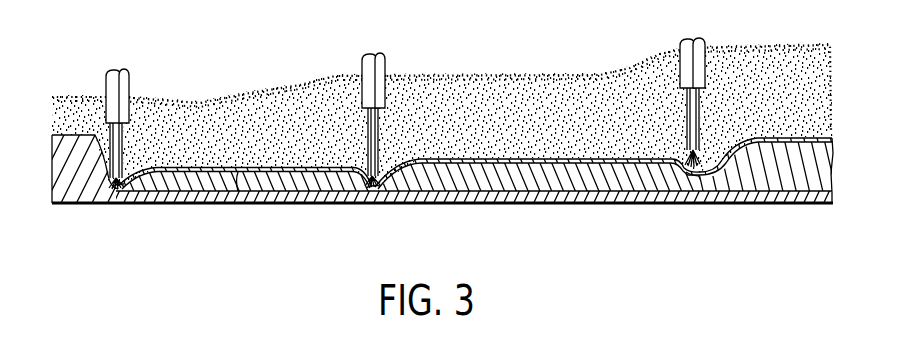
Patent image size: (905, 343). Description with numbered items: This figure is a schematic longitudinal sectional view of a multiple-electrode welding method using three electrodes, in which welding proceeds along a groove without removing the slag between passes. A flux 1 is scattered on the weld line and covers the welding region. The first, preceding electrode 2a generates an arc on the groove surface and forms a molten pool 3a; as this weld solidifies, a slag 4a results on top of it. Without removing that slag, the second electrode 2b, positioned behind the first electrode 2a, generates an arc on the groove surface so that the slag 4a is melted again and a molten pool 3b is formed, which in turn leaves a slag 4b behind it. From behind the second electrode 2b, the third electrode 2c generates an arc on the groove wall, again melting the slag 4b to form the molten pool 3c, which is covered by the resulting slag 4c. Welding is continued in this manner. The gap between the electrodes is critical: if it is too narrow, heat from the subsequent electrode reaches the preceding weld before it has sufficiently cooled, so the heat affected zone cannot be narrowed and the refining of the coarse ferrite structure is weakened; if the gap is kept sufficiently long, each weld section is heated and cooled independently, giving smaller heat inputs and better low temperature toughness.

The flux 1 is at (238, 117).
The preceding electrode 2a is at (121, 146).
The second electrode 2b is at (378, 127).
The third electrode 2c is at (700, 107).
The molten pool 3a is at (118, 204).
The molten pool 3b is at (375, 192).
The molten pool 3c is at (711, 175).
The slag 4a is at (236, 204).
The slag 4b is at (503, 162).
The slag 4c is at (772, 143).